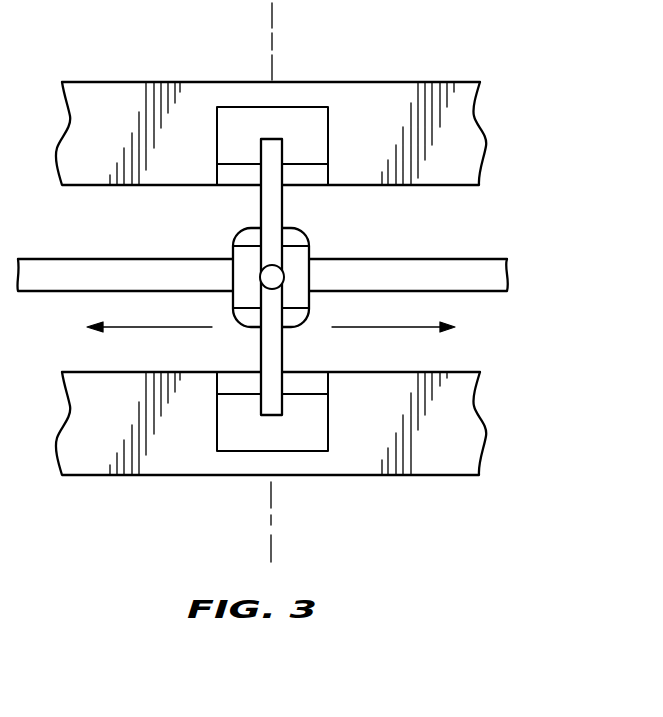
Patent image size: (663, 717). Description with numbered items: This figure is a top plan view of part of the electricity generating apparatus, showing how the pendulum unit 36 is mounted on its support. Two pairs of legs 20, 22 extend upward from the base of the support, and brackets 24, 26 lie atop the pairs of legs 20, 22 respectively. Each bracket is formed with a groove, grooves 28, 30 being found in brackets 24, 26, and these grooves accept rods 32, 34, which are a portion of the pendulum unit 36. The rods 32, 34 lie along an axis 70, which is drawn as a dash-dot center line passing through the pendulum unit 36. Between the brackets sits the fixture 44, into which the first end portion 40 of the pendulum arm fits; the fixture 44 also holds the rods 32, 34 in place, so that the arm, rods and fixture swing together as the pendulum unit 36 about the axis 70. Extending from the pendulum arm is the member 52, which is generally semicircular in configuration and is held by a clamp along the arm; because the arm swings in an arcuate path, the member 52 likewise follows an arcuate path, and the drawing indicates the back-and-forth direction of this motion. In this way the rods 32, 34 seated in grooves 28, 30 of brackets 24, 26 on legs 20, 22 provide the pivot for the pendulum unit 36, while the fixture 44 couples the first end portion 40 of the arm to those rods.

The pair of legs 20 is at (460, 408).
The pair of legs 22 is at (462, 157).
The bracket 24 is at (288, 437).
The bracket 26 is at (242, 130).
The groove 28 is at (283, 383).
The groove 30 is at (259, 172).
The rod 32 is at (258, 333).
The rod 34 is at (276, 218).
The pendulum unit 36 is at (289, 274).
The first end portion 40 is at (257, 273).
The fixture 44 is at (302, 268).
The member 52 is at (65, 275).
The axis 70 is at (272, 56).